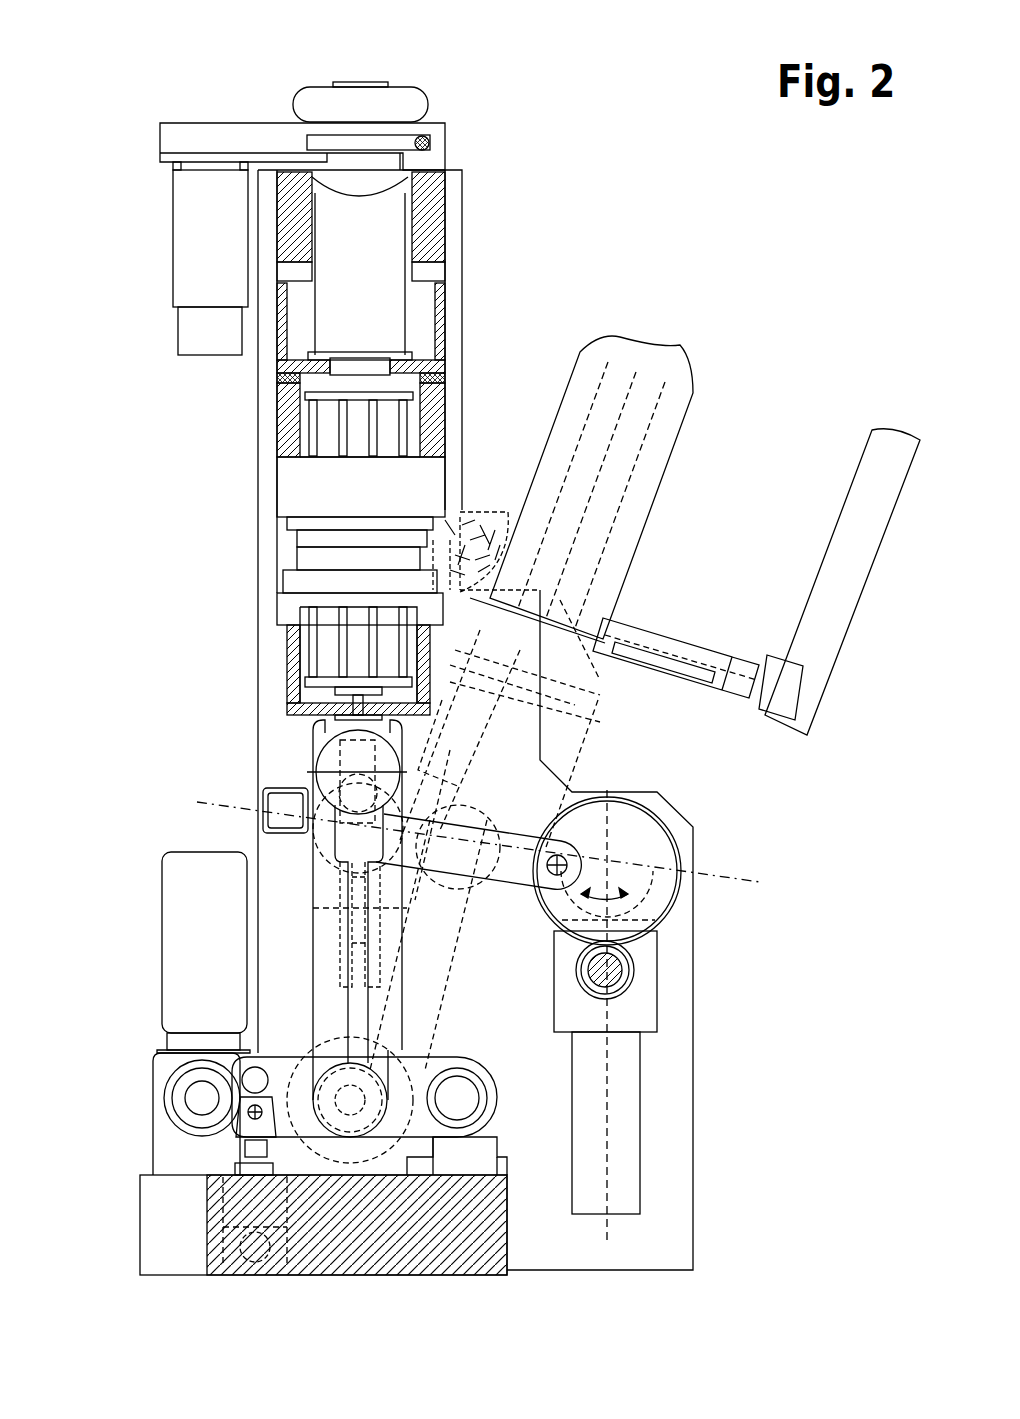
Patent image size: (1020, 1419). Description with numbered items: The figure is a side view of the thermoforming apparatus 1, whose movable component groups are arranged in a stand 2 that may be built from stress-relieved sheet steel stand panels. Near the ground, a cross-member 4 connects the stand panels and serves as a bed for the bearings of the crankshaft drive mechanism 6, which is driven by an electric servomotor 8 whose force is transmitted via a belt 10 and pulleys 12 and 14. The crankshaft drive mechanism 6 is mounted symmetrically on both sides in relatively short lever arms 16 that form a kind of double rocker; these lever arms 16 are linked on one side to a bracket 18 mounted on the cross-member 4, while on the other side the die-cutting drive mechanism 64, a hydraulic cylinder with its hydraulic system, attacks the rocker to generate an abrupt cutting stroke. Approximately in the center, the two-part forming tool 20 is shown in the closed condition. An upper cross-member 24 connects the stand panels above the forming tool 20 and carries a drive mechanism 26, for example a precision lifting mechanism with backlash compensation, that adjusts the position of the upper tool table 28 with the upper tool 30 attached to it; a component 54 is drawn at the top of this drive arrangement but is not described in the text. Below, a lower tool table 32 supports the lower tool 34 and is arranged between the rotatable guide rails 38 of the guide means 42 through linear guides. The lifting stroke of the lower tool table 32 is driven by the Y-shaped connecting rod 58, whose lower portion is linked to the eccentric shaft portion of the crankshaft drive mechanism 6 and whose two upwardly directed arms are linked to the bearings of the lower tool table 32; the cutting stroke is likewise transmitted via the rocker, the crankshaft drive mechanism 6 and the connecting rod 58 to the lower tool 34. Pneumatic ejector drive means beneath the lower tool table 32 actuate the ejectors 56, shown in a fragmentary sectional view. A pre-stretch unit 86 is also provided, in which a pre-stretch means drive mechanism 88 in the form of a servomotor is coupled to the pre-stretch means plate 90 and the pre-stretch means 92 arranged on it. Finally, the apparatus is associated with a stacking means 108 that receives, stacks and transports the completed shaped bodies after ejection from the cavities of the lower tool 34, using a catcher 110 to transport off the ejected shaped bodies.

The thermoforming apparatus 1 is at (233, 75).
The stand 2 is at (267, 677).
The cross-member 4 is at (412, 1240).
The crankshaft drive mechanism 6 is at (365, 1113).
The electric servomotor 8 is at (215, 968).
The belt 10 is at (307, 1157).
The pulley 12 is at (180, 1097).
The pulley 14 is at (440, 1090).
The lever arms 16 is at (435, 1125).
The bracket 18 is at (477, 1153).
The two-part forming tool 20 is at (240, 487).
The cross-member 24 is at (432, 220).
The drive mechanism 26 is at (437, 142).
The upper tool table 28 is at (275, 362).
The upper tool 30 is at (303, 498).
The lower tool table 32 is at (287, 642).
The lower tool 34 is at (310, 558).
The rotatable guide rails 38 is at (310, 997).
The guide means 42 is at (140, 855).
The cap 54 is at (427, 88).
The ejectors 56 is at (317, 685).
The connecting rod 58 is at (340, 922).
The die-cutting drive mechanism 64 is at (240, 1167).
The pre-stretch unit 86 is at (380, 322).
The pre-stretch means drive mechanism 88 is at (202, 237).
The pre-stretch means plate 90 is at (310, 395).
The pre-stretch means 92 is at (307, 448).
The stacking means 108 is at (660, 410).
The catcher 110 is at (705, 690).